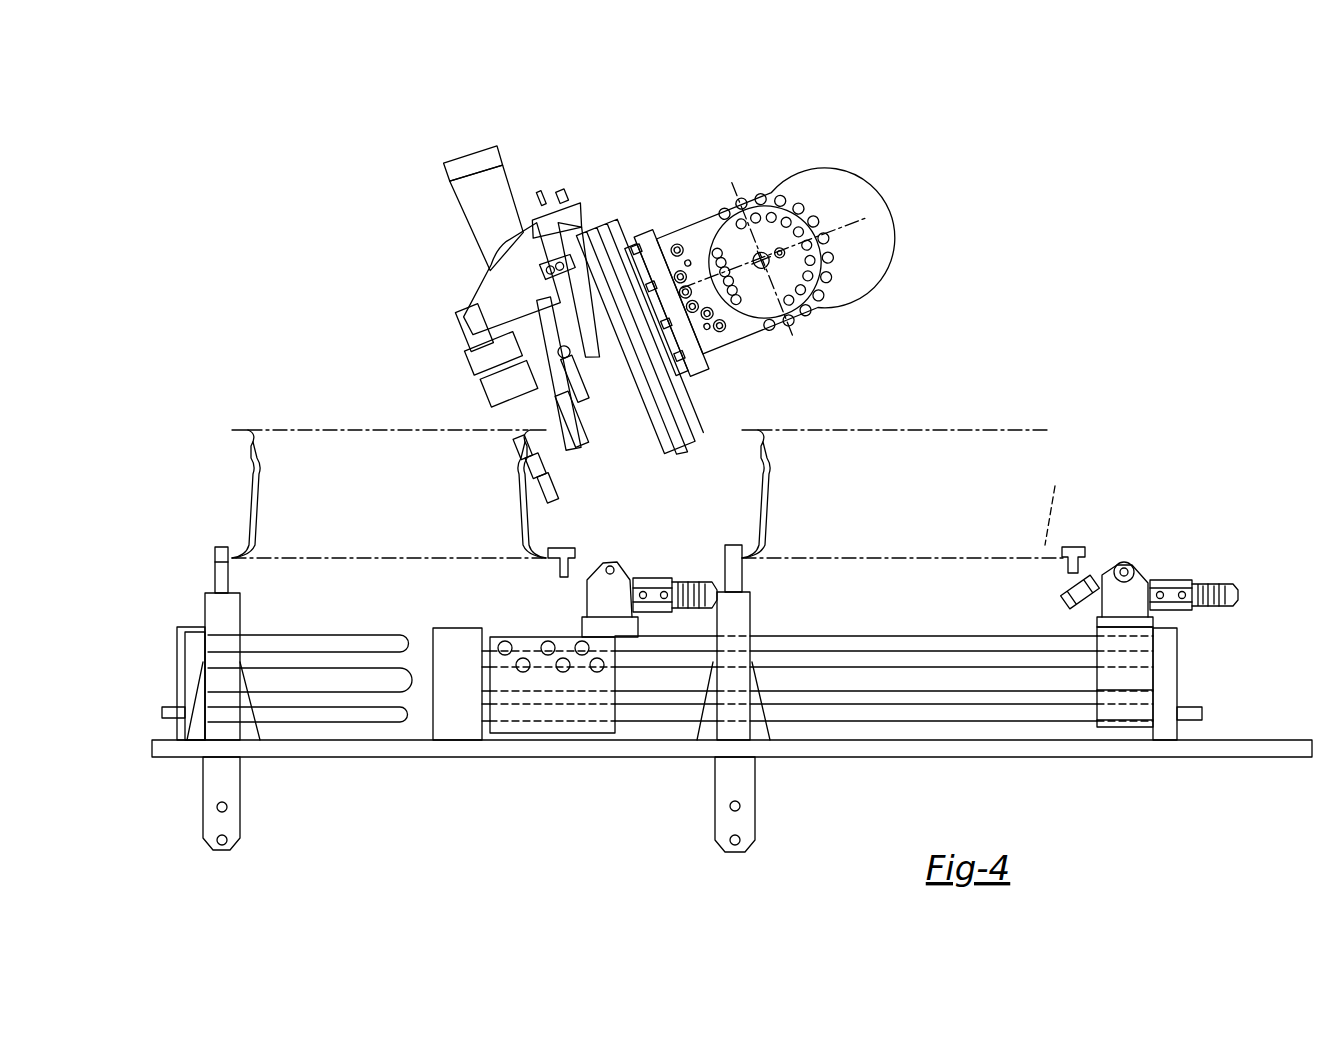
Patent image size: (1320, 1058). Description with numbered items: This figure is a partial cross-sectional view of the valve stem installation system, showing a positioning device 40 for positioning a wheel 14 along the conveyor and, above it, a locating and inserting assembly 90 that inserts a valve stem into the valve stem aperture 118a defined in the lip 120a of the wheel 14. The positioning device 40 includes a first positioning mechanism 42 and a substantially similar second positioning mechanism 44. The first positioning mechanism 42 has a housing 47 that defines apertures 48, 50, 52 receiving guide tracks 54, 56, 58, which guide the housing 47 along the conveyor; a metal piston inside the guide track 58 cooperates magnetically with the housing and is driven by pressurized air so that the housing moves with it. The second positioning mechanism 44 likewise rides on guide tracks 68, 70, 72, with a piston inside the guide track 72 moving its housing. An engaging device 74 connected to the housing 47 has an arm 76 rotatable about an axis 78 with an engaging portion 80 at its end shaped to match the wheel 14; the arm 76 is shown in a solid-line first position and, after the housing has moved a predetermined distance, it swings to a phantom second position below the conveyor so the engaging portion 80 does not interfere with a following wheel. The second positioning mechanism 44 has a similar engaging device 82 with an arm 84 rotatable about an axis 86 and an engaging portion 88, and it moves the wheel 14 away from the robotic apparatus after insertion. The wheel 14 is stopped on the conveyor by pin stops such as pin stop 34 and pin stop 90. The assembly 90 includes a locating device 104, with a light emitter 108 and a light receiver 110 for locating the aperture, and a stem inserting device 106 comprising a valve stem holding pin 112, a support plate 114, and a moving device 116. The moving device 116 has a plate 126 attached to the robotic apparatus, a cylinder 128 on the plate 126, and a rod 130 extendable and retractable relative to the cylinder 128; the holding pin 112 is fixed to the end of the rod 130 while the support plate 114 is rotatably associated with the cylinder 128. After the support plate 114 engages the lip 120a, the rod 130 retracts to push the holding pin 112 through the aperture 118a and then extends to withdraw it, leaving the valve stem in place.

The wheel 14 is at (1031, 478).
The pin stop 34 is at (779, 494).
The positioning device 40 is at (732, 774).
The first positioning mechanism 42 is at (1165, 714).
The second positioning mechanism 44 is at (542, 705).
The housing 47 is at (1161, 677).
The aperture 48 is at (1120, 758).
The aperture 50 is at (1168, 627).
The aperture 52 is at (1167, 683).
The guide track 54 is at (884, 732).
The guide track 56 is at (884, 618).
The guide track 58 is at (884, 744).
The guide track 68 is at (308, 754).
The guide track 70 is at (308, 618).
The guide track 72 is at (310, 736).
The engaging device 74 is at (1194, 555).
The arm 76 is at (1125, 546).
The axis 78 is at (1133, 541).
The engaging portion 80 is at (1078, 532).
The engaging device 82 is at (675, 573).
The arm 84 is at (587, 589).
The axis 86 is at (626, 550).
The engaging portion 88 is at (528, 568).
The pin stop 90 is at (525, 478).
The locating device 104 is at (432, 343).
The stem inserting device 106 is at (487, 249).
The light emitter 108 is at (417, 316).
The light receiver 110 is at (502, 492).
The valve stem holding pin 112 is at (471, 470).
The support plate 114 is at (438, 389).
The moving device 116 is at (452, 159).
The valve stem aperture 118a is at (472, 446).
The lip 120a is at (344, 479).
The plate 126 is at (854, 390).
The cylinder 128 is at (469, 136).
The rod 130 is at (519, 389).